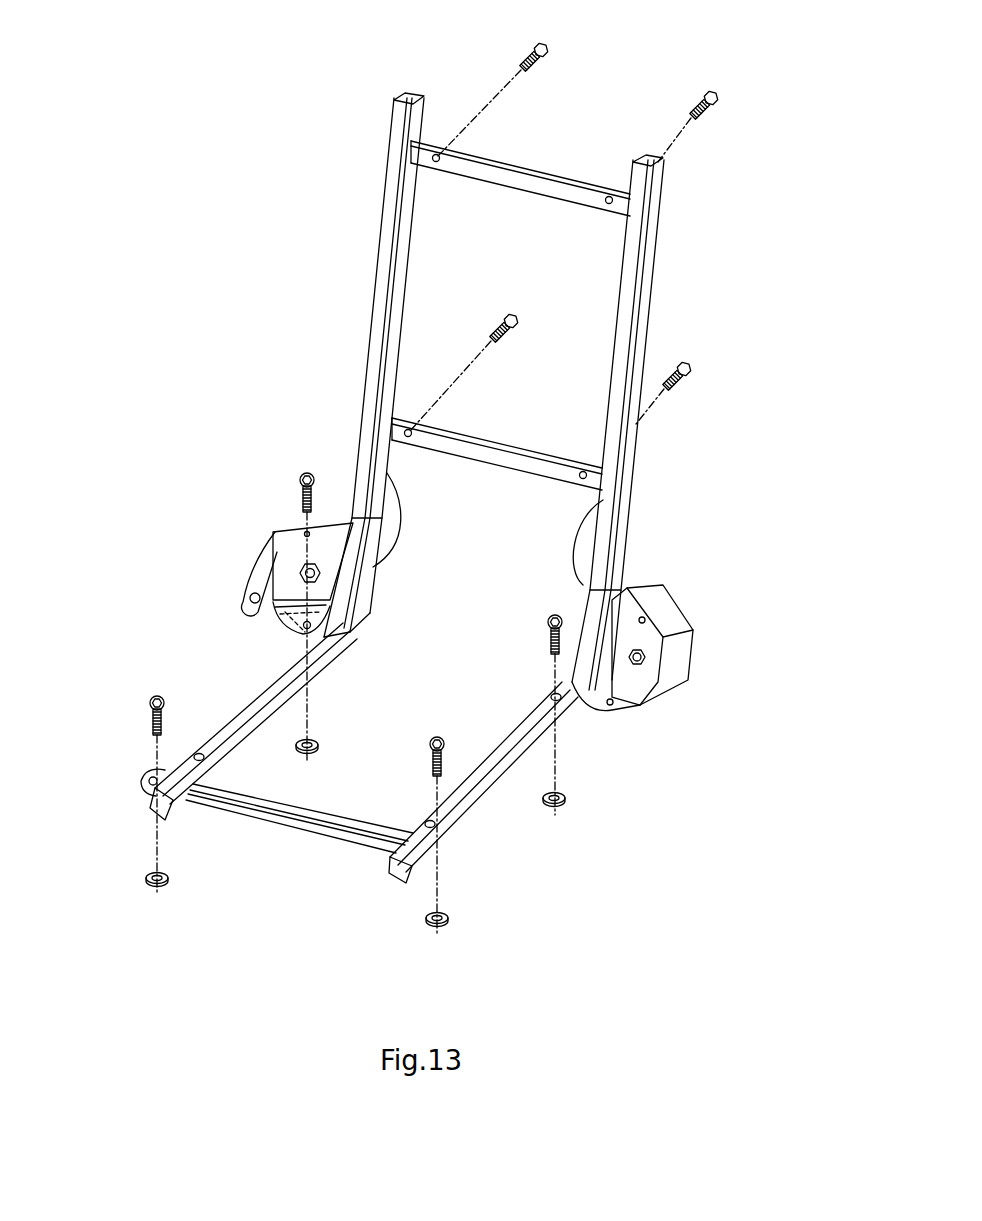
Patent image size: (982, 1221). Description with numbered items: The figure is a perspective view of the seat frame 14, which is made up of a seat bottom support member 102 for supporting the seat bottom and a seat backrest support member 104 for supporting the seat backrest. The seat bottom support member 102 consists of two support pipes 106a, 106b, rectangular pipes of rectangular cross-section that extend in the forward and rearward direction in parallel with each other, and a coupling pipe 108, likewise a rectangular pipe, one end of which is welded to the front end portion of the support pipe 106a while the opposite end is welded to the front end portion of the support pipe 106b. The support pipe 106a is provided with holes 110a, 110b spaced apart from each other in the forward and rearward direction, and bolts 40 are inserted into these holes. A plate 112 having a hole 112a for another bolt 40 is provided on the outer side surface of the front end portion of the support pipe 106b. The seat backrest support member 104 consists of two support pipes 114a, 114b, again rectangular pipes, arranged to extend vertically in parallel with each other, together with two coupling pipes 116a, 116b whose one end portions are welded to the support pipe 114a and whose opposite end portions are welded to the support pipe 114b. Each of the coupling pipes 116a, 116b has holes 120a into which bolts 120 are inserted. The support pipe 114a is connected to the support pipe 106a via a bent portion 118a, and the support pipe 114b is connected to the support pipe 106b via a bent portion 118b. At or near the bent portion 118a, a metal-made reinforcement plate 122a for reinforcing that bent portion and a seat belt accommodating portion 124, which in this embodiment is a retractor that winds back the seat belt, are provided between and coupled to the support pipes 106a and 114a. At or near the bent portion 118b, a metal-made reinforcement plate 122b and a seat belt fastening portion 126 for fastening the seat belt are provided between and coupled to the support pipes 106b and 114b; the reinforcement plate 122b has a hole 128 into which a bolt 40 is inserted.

The seat frame 14 is at (370, 162).
The bolt 40 is at (300, 476).
The seat bottom support member 102 is at (570, 732).
The seat backrest support member 104 is at (668, 243).
The support pipe 106a is at (495, 815).
The support pipe 106b is at (252, 700).
The coupling pipe 108 is at (275, 833).
The hole 110a is at (426, 820).
The hole 110b is at (549, 698).
The plate 112 is at (141, 790).
The hole 112a is at (143, 773).
The support pipe 114a is at (632, 338).
The support pipe 114b is at (390, 303).
The coupling pipe 116a is at (511, 178).
The coupling pipe 116b is at (488, 445).
The bent portion 118a is at (622, 666).
The bent portion 118b is at (378, 595).
The bolt 120 is at (532, 44).
The hole 120a is at (438, 154).
The reinforcement plate 122a is at (603, 500).
The reinforcement plate 122b is at (387, 473).
The seat belt accommodating portion 124 is at (664, 586).
The seat belt fastening portion 126 is at (278, 527).
The hole 128 is at (248, 568).